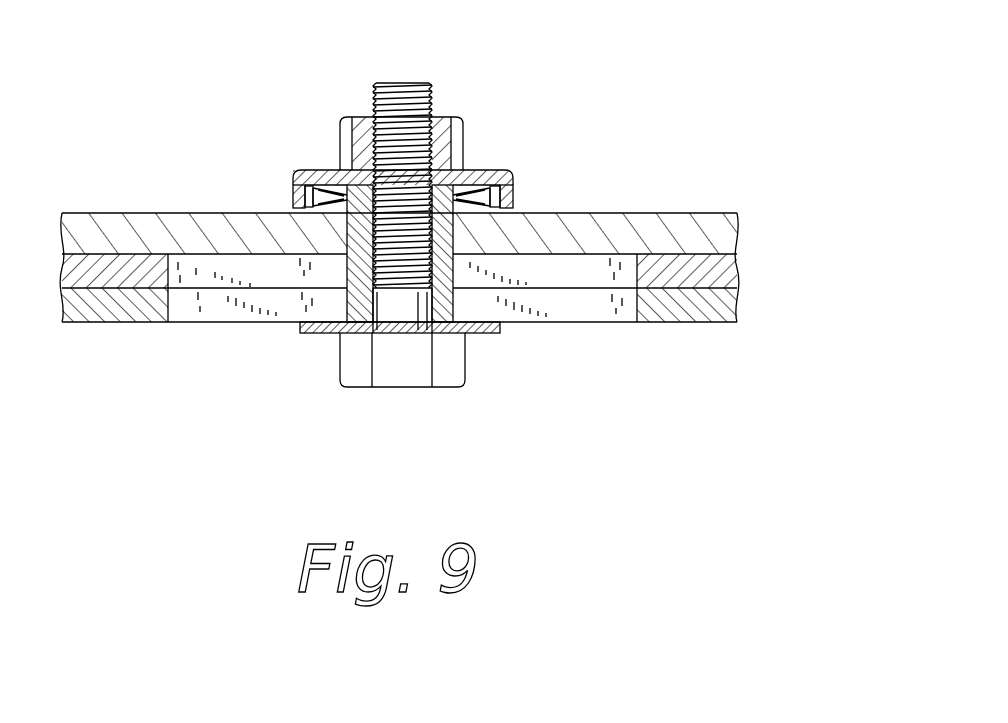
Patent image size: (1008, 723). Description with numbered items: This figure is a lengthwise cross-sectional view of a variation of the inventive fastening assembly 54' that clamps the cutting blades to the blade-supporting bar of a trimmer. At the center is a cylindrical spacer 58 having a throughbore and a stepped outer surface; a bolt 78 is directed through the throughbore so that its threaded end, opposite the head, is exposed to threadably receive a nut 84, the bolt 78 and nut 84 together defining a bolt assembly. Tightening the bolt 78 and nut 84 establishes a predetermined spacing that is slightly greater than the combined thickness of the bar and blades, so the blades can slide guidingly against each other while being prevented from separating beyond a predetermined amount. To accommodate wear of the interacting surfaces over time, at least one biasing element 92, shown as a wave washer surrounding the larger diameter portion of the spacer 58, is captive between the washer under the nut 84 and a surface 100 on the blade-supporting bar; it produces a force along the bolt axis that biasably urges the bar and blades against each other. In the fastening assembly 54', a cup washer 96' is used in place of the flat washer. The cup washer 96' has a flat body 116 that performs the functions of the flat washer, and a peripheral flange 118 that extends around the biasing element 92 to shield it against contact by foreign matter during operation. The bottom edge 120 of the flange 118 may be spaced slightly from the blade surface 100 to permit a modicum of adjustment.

The fastening assembly 54' is at (415, 205).
The cylindrical spacer 58 is at (455, 297).
The bolt 78 is at (403, 315).
The nut 84 is at (460, 123).
The biasing element 92 is at (497, 170).
The cup washer 96' is at (375, 150).
The surface 100 is at (100, 213).
The flat body 116 is at (347, 117).
The peripheral flange 118 is at (293, 187).
The bottom edge 120 is at (300, 208).